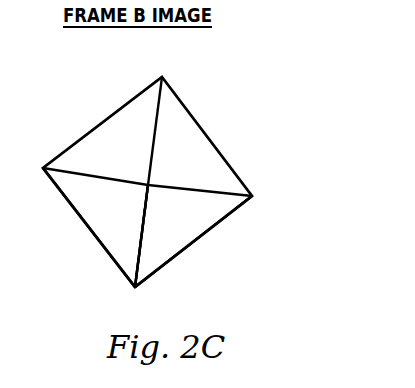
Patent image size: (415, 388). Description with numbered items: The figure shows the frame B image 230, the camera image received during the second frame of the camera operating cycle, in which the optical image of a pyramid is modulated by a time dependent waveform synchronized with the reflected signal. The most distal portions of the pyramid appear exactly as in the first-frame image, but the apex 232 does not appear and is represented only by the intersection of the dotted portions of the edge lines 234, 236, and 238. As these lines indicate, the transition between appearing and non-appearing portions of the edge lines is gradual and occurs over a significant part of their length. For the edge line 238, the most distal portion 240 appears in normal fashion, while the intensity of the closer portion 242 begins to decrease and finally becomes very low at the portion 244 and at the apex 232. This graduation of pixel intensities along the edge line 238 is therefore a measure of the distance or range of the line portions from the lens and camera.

The frame B image 230 is at (273, 79).
The apex 232 is at (147, 187).
The edge line 234 is at (156, 117).
The edge line 236 is at (213, 190).
The edge line 238 is at (140, 246).
The most distal portion 240 is at (134, 287).
The closer portion 242 is at (143, 220).
The low intensity portion 244 is at (146, 200).